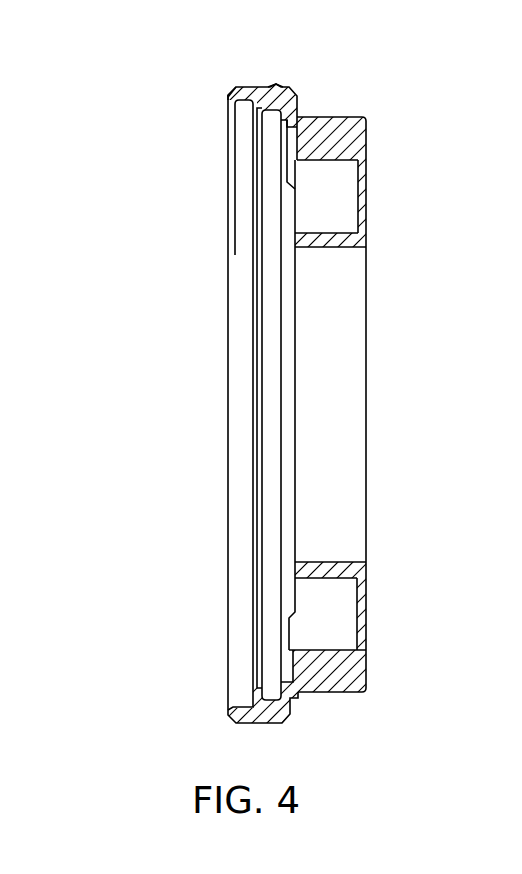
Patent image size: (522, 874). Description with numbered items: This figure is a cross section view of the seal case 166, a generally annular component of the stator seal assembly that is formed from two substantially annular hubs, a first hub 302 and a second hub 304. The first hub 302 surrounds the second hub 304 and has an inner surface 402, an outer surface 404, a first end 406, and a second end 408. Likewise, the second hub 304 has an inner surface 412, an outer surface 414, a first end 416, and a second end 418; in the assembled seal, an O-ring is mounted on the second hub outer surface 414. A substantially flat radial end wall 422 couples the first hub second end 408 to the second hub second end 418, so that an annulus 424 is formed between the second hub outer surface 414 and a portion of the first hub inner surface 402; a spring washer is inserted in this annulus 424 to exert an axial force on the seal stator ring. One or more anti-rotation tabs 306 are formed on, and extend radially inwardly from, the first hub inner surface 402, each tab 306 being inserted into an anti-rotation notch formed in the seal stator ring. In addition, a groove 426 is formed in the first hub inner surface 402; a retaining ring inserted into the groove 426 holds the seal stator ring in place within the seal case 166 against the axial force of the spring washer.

The seal case 166 is at (79, 113).
The first hub 302 is at (337, 117).
The second hub 304 is at (337, 248).
The anti-rotation tab 306 is at (302, 153).
The inner surface 402 is at (236, 102).
The outer surface 404 is at (250, 87).
The first end 406 is at (230, 92).
The second end 408 is at (367, 135).
The inner surface 412 is at (332, 562).
The outer surface 414 is at (330, 580).
The first end 416 is at (296, 246).
The second end 418 is at (367, 231).
The radial end wall 422 is at (367, 191).
The annulus 424 is at (352, 208).
The groove 426 is at (277, 85).